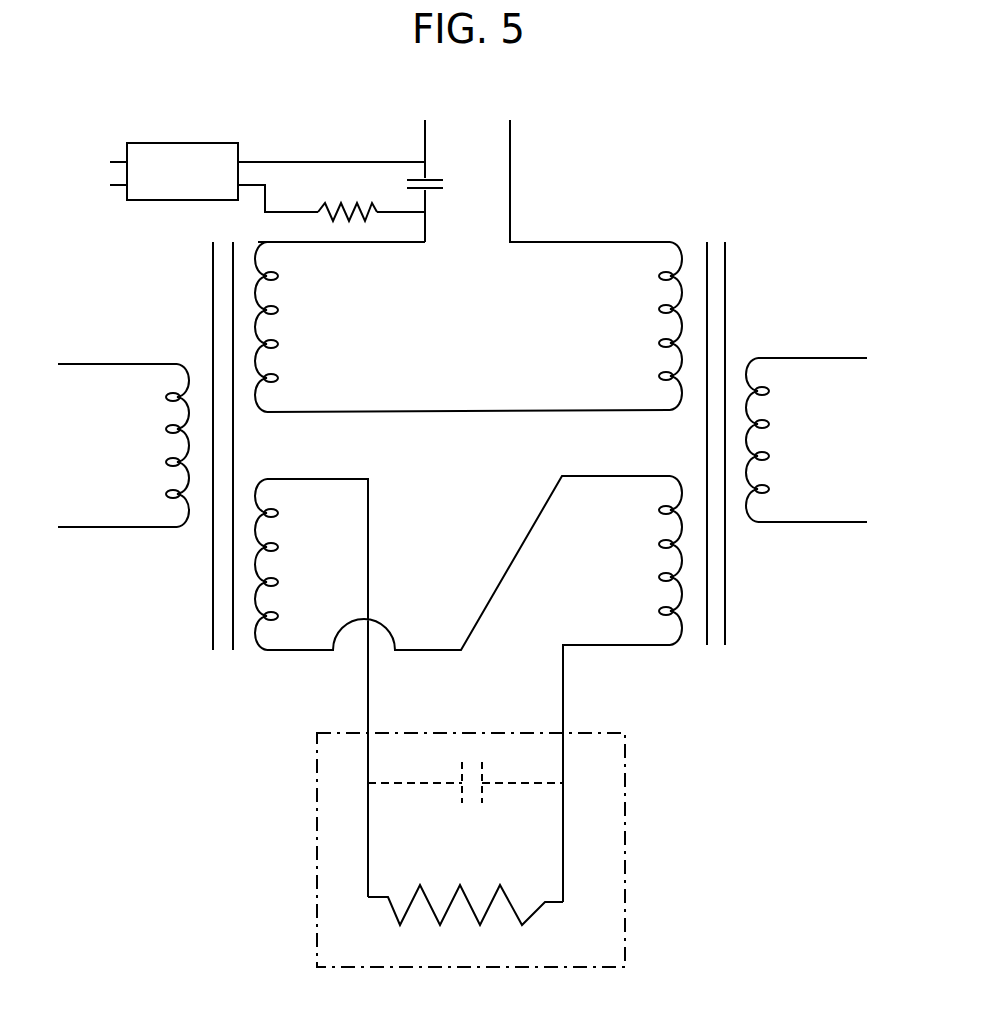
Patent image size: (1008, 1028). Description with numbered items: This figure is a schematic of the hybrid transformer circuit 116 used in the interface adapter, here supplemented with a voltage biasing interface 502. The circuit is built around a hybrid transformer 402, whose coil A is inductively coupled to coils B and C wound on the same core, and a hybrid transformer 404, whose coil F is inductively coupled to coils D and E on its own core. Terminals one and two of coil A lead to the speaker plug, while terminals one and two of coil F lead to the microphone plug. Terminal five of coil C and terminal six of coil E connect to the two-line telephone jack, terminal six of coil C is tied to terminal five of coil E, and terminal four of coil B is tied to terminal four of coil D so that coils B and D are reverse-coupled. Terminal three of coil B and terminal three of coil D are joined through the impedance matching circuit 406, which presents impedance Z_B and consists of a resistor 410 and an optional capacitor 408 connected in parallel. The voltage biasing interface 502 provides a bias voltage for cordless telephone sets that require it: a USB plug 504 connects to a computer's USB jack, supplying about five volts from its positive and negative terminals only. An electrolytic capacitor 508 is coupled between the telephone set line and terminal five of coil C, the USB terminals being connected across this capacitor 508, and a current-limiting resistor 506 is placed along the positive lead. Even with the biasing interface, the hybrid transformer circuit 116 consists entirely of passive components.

The hybrid transformer circuit 116 is at (171, 890).
The hybrid transformer 402 is at (354, 569).
The hybrid transformer 404 is at (726, 572).
The impedance matching circuit 406 is at (625, 775).
The capacitor 408 is at (482, 787).
The resistor 410 is at (533, 913).
The voltage biasing interface 502 is at (352, 162).
The USB plug 504 is at (212, 143).
The current-limiting resistor 506 is at (330, 210).
The capacitor 508 is at (410, 187).